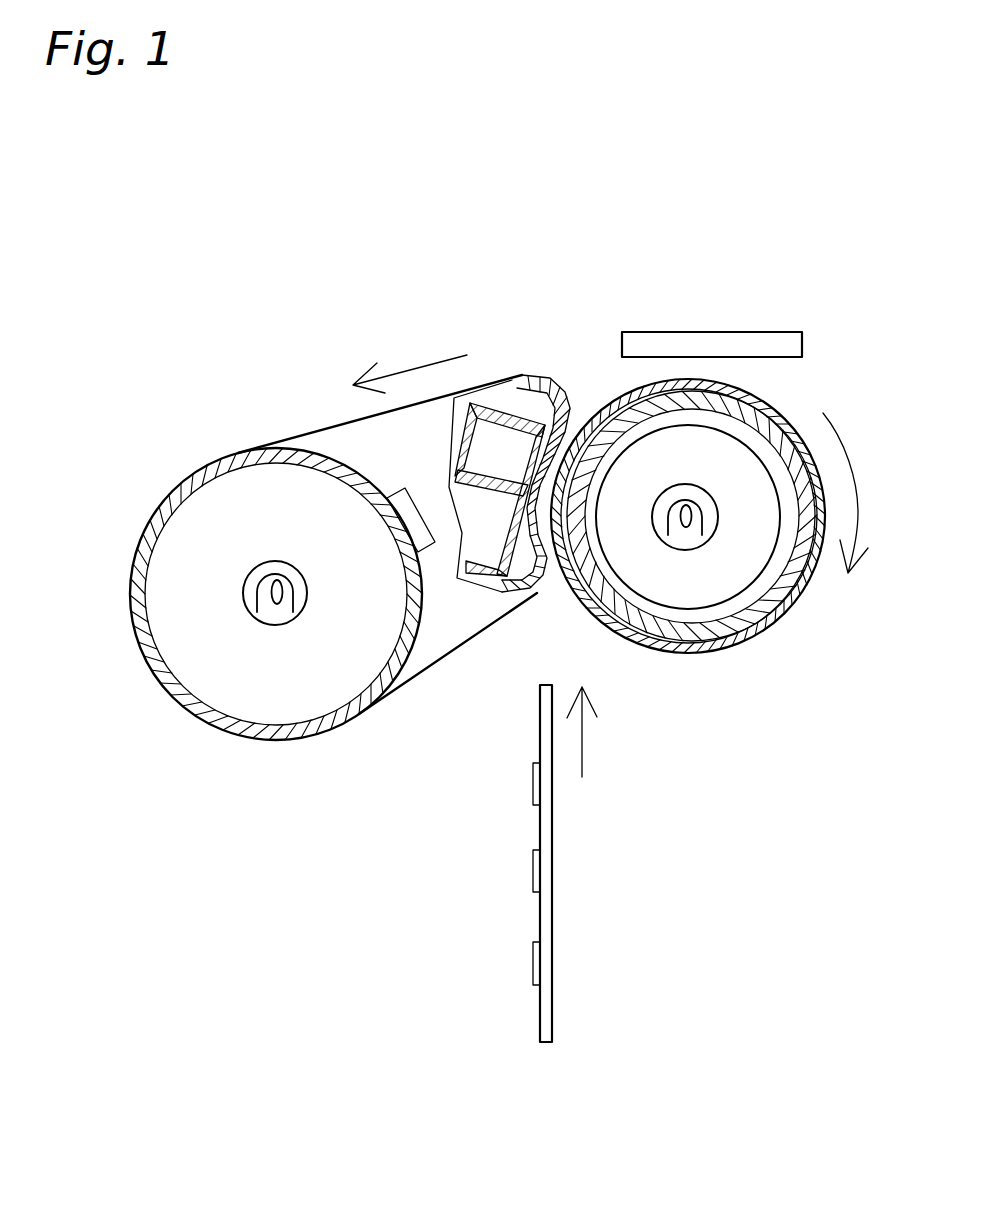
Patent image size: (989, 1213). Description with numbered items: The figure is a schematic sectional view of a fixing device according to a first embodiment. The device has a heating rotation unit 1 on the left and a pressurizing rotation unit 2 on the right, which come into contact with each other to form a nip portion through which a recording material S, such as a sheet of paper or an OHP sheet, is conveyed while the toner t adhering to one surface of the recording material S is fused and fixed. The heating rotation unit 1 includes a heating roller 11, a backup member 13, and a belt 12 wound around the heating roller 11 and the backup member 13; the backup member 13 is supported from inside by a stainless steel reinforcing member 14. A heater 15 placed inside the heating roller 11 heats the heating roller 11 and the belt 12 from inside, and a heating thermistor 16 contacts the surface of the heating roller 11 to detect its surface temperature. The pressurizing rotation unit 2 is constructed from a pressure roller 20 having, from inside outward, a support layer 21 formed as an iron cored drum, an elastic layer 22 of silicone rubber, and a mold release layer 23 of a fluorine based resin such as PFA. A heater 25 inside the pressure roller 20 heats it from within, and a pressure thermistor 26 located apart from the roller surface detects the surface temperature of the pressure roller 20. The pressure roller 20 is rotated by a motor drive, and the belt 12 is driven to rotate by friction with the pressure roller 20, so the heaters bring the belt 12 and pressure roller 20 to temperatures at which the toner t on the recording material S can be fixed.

The heating rotation unit 1 is at (307, 408).
The heating roller 11 is at (137, 596).
The belt 12 is at (338, 422).
The backup member 13 is at (523, 598).
The reinforcing member 14 is at (447, 553).
The heater 15 is at (273, 617).
The heating thermistor 16 is at (408, 518).
The pressurizing rotation unit 2 is at (720, 492).
The pressure roller 20 is at (737, 362).
The support layer 21 is at (785, 563).
The elastic layer 22 is at (770, 600).
The mold release layer 23 is at (718, 648).
The heater 25 is at (683, 542).
The pressure thermistor 26 is at (685, 338).
The recording material S is at (552, 915).
The toner t is at (533, 873).